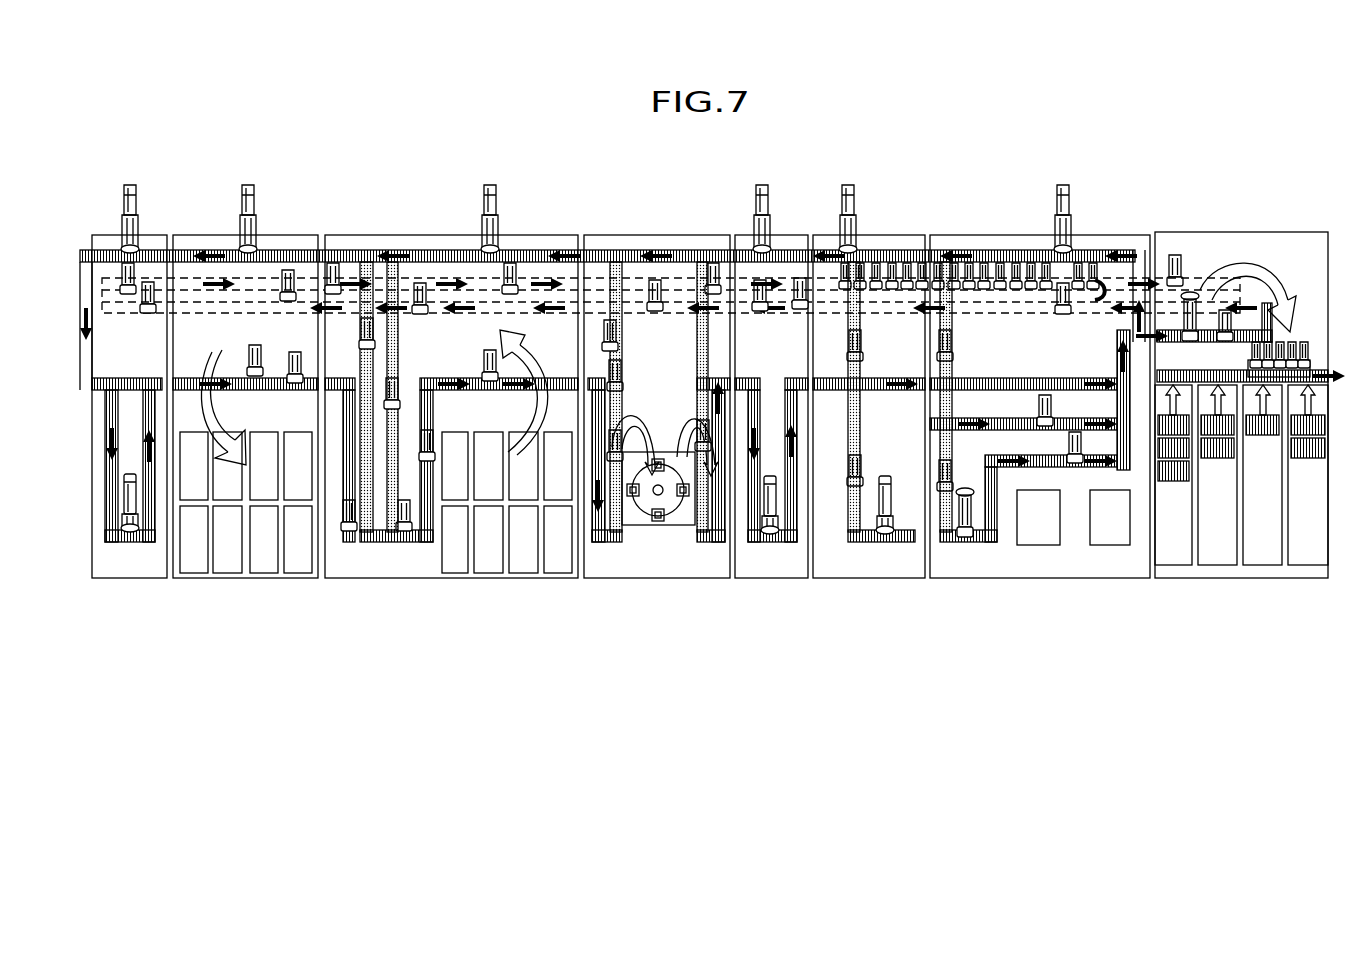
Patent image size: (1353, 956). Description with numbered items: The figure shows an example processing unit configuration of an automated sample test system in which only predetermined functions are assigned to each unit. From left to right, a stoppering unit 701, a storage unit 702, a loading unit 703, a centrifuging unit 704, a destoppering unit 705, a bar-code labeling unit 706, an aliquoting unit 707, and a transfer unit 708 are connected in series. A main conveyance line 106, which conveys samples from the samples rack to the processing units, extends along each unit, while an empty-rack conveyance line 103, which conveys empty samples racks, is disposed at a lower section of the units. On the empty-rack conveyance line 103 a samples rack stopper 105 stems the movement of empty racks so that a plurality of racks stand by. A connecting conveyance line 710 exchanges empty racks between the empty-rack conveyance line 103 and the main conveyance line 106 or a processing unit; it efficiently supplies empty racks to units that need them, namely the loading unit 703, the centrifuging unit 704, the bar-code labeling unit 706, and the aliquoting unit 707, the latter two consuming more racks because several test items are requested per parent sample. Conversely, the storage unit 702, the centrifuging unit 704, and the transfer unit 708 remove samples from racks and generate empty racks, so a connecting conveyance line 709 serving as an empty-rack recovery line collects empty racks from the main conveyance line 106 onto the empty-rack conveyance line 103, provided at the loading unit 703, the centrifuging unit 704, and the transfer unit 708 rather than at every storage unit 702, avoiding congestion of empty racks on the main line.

The empty-rack conveyance line 103 is at (185, 293).
The samples rack stopper 105 is at (1100, 293).
The main conveyance line 106 is at (85, 297).
The stoppering unit 701 is at (131, 570).
The storage unit 702 is at (236, 570).
The loading unit 703 is at (426, 570).
The centrifuging unit 704 is at (661, 570).
The destoppering unit 705 is at (771, 570).
The bar-code labeling unit 706 is at (873, 570).
The aliquoting unit 707 is at (1038, 565).
The transfer unit 708 is at (1236, 570).
The connecting conveyance line (empty-rack recovery line) 709 is at (350, 357).
The connecting conveyance line 710 is at (400, 357).